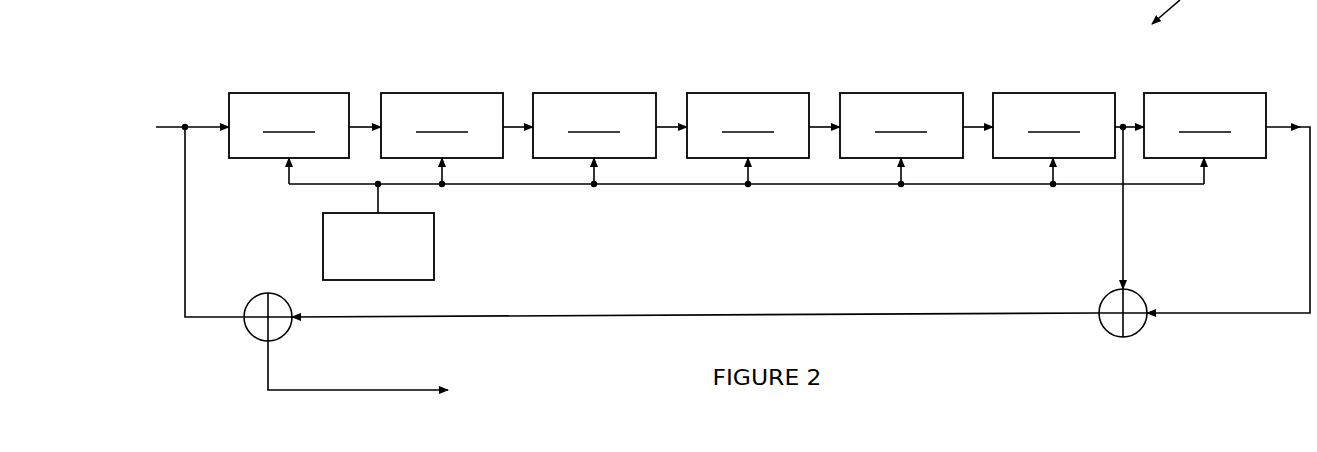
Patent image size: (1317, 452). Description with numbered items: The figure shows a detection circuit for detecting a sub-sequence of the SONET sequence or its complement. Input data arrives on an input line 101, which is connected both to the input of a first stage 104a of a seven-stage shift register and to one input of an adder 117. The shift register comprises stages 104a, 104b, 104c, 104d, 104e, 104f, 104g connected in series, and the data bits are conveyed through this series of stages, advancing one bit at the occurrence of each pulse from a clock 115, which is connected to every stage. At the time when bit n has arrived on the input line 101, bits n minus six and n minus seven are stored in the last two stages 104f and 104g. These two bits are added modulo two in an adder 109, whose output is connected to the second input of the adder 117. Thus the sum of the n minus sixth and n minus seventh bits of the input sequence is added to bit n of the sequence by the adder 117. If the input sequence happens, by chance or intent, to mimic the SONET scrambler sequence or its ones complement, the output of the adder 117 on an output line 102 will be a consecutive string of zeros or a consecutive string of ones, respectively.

The input line 101 is at (163, 117).
The output line 102 is at (380, 386).
The first stage 104a is at (305, 138).
The shift register stage 104b is at (457, 140).
The shift register stage 104c is at (610, 140).
The shift register stage 104d is at (763, 140).
The shift register stage 104e is at (916, 140).
The shift register stage 104f is at (1068, 140).
The shift register stage 104g is at (1205, 138).
The adder 109 is at (1134, 319).
The clock 115 is at (357, 261).
The adder 117 is at (256, 324).